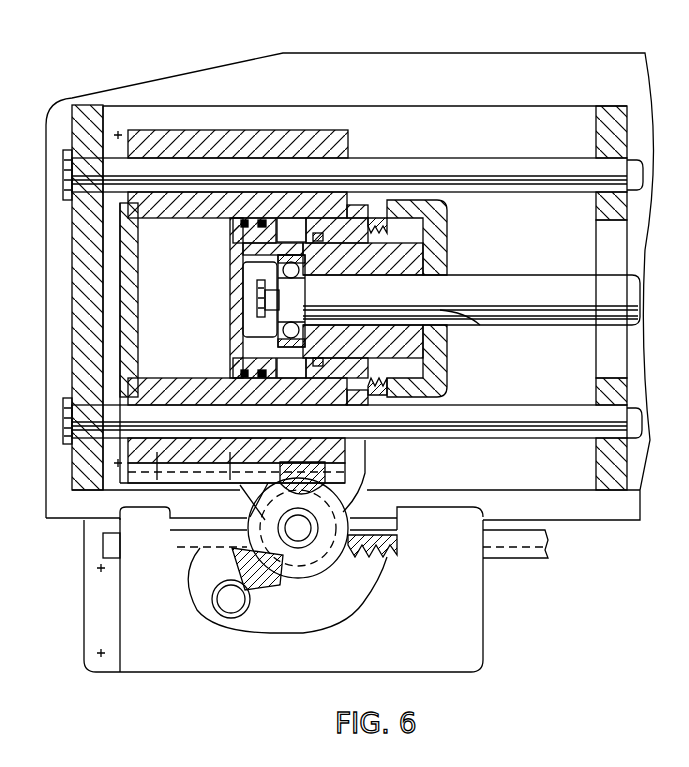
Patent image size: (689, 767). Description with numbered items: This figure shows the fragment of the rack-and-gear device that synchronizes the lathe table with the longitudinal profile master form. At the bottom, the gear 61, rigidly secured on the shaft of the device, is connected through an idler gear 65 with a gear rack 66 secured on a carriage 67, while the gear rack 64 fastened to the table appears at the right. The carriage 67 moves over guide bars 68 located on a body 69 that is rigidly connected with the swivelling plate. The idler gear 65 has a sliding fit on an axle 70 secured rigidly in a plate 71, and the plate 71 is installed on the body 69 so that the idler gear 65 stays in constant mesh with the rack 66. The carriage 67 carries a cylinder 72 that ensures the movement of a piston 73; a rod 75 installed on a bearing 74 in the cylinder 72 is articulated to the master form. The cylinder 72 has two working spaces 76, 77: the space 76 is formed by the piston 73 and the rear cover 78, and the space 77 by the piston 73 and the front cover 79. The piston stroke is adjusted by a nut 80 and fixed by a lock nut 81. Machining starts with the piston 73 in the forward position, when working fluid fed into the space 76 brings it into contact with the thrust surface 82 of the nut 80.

The gear 61 is at (265, 618).
The gear rack 64 is at (530, 557).
The idler gear 65 is at (317, 565).
The gear rack 66 is at (147, 465).
The carriage 67 is at (292, 130).
The guide bars 68 is at (527, 173).
The body 69 is at (607, 108).
The axle 70 is at (300, 528).
The plate 71 is at (355, 462).
The cylinder 72 is at (160, 378).
The piston 73 is at (298, 233).
The bearing 74 is at (277, 328).
The rod 75 is at (547, 315).
The working space 76 is at (150, 238).
The working space 77 is at (282, 192).
The rear cover 78 is at (123, 282).
The front cover 79 is at (377, 217).
The nut 80 is at (447, 243).
The lock nut 81 is at (397, 395).
The thrust surface 82 is at (480, 326).